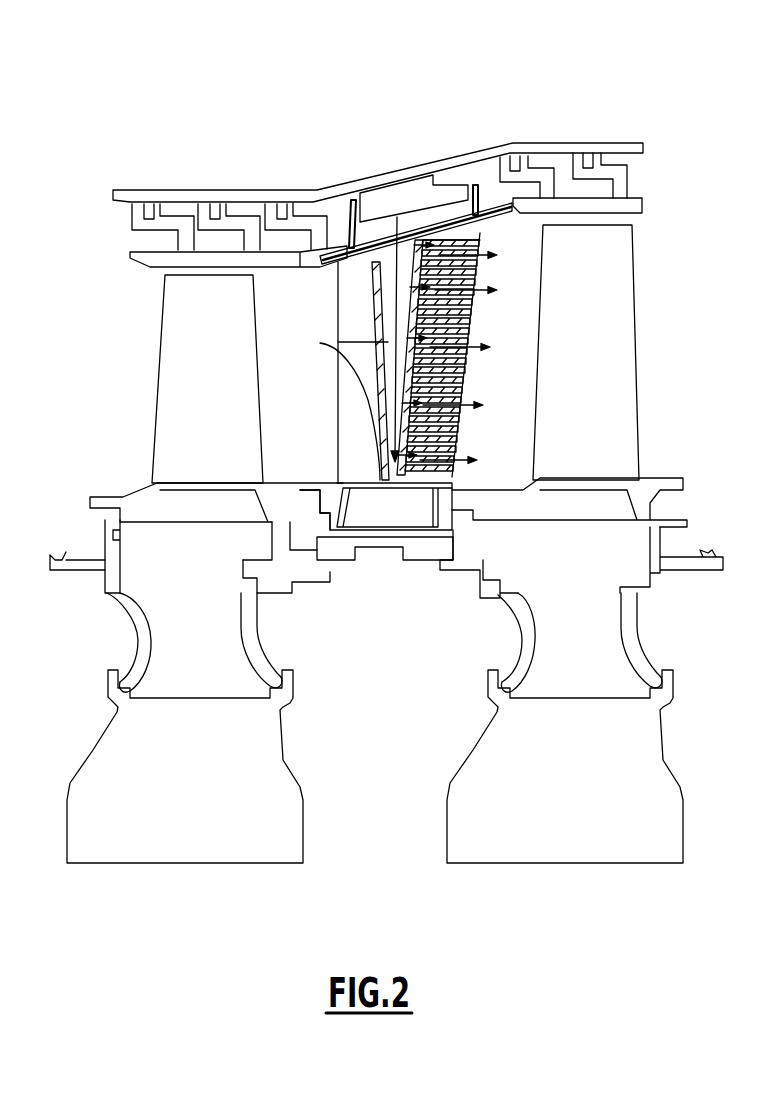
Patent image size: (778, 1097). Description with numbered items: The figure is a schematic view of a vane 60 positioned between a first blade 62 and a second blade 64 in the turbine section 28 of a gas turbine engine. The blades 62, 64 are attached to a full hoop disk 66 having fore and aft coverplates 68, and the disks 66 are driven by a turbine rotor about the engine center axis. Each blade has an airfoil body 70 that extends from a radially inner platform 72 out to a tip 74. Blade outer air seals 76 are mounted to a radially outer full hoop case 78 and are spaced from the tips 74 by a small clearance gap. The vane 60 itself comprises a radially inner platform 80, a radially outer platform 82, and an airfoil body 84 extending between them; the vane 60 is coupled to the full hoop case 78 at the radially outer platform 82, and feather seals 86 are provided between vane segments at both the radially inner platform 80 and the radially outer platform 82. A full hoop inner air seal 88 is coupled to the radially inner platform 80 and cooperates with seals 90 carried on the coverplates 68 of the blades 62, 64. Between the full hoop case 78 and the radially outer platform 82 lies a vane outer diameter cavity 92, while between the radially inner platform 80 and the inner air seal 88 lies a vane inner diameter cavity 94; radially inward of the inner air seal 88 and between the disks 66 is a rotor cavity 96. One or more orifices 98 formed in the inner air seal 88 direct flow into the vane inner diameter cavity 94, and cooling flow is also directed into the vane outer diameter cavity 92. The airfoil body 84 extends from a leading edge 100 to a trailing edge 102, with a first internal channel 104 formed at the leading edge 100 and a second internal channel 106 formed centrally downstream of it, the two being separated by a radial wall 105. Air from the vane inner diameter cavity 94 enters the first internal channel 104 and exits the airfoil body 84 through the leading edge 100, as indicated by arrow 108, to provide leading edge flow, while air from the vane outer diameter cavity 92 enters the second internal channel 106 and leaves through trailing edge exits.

The turbine section 28 is at (545, 105).
The vane 60 is at (318, 312).
The first blade 62 is at (133, 360).
The second blade 64 is at (663, 342).
The full hoop disk 66 is at (283, 827).
The coverplate 68 is at (103, 591).
The airfoil body 70 is at (177, 410).
The radially inner platform 72 is at (90, 503).
The tip 74 is at (163, 276).
The blade outer air seal 76 is at (640, 194).
The full hoop case 78 is at (630, 147).
The radially inner platform 80 is at (483, 477).
The radially outer platform 82 is at (500, 213).
The airfoil body 84 is at (347, 415).
The feather seal 86 is at (340, 483).
The inner air seal 88 is at (290, 560).
The seal 90 is at (342, 582).
The vane outer diameter cavity 92 is at (407, 200).
The vane inner diameter cavity 94 is at (353, 523).
The rotor cavity 96 is at (272, 685).
The orifice 98 is at (384, 515).
The leading edge 100 is at (342, 470).
The trailing edge 102 is at (460, 447).
The first internal channel 104 is at (350, 325).
The radial wall 105 is at (392, 278).
The second internal channel 106 is at (320, 343).
The arrow 108 is at (398, 470).